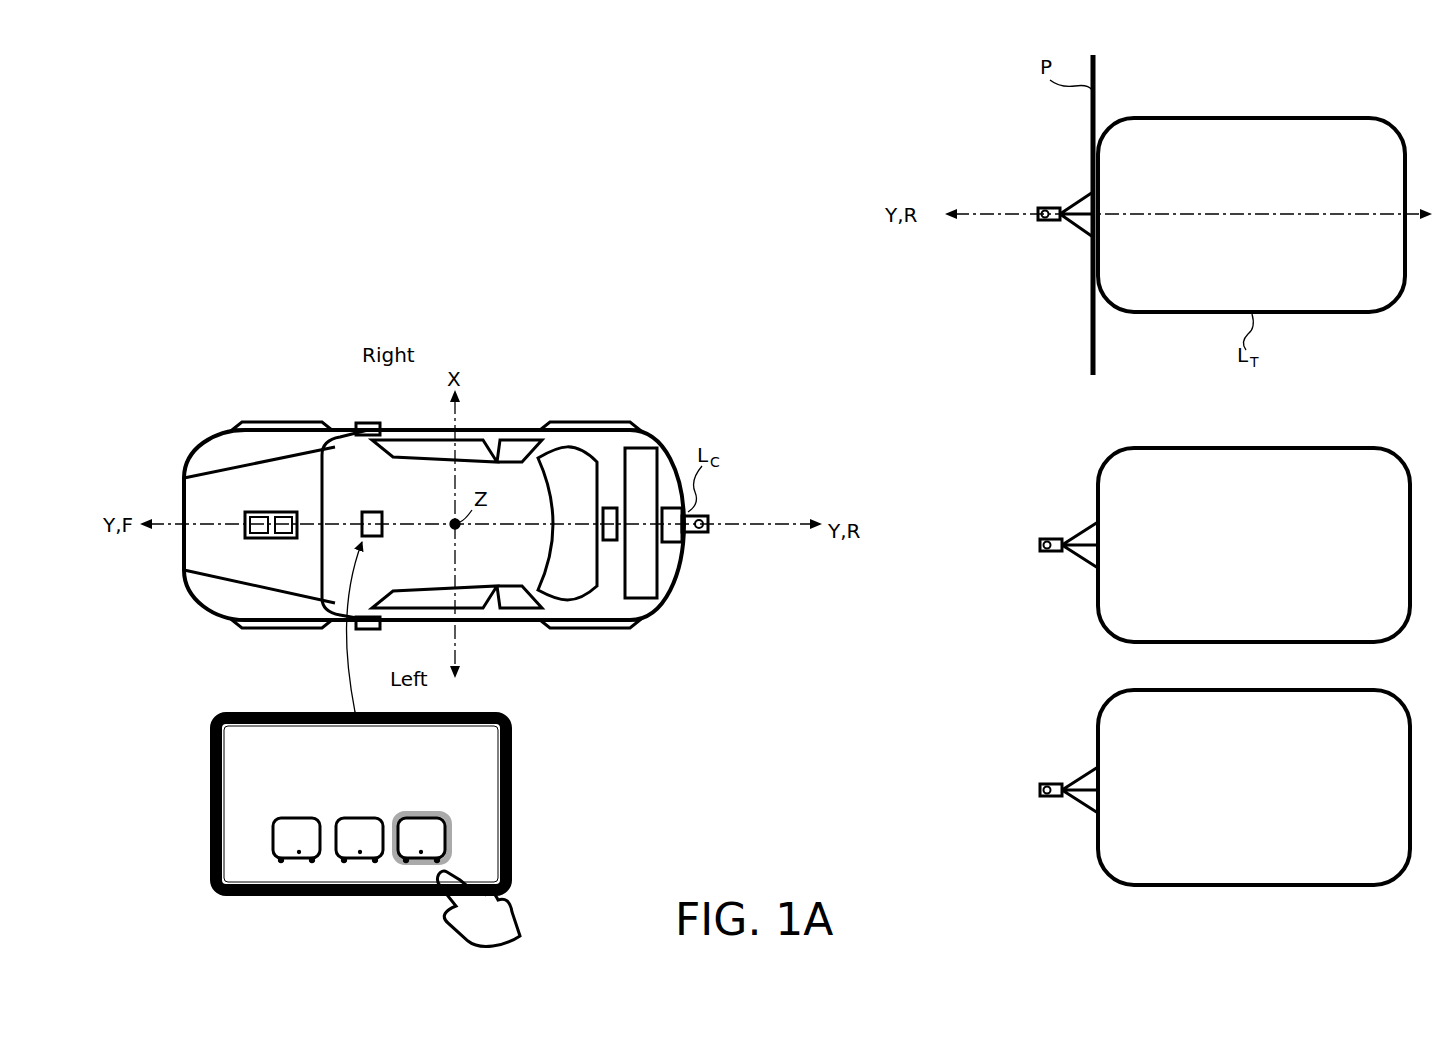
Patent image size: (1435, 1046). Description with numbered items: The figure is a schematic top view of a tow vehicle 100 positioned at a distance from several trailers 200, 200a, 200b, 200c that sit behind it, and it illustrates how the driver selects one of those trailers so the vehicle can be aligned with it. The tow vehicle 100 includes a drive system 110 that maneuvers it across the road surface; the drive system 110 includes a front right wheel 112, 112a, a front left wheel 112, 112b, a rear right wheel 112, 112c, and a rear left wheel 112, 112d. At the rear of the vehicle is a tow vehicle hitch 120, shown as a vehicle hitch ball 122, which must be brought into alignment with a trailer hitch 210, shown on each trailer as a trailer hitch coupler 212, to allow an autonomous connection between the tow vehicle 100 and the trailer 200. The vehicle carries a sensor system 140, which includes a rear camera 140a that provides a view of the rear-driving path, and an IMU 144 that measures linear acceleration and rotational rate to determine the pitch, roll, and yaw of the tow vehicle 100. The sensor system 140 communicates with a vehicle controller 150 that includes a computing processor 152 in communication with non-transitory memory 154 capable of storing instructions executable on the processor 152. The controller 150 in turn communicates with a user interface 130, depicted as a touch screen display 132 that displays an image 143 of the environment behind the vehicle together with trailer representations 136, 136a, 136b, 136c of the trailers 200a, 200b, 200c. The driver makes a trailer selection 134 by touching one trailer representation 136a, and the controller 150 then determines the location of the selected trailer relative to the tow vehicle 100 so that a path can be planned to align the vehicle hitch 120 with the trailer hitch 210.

The tow vehicle 100 is at (205, 412).
The drive system 110 is at (434, 524).
The wheel 112 is at (434, 524).
The front right wheel 112a is at (272, 422).
The front left wheel 112b is at (278, 630).
The rear right wheel 112c is at (578, 422).
The rear left wheel 112d is at (588, 630).
The tow vehicle hitch 120 is at (695, 532).
The vehicle hitch ball 122 is at (705, 530).
The user interface 130 is at (380, 524).
The touch screen display 132 is at (488, 800).
The trailer selection 134 is at (440, 816).
The trailer representation 136 is at (359, 809).
The trailer representation 136a is at (415, 818).
The trailer representation 136b is at (355, 818).
The trailer representation 136c is at (292, 818).
The sensor system 140 is at (370, 423).
The rear camera 140a is at (680, 543).
The image 143 is at (242, 756).
The IMU 144 is at (612, 540).
The vehicle controller 150 is at (268, 512).
The computing device (processor) 152 is at (258, 538).
The non-transitory memory 154 is at (284, 538).
The trailer 200 is at (1254, 501).
The trailer 200a is at (1251, 215).
The trailer 200b is at (1254, 545).
The trailer 200c is at (1254, 787).
The trailer hitch 210 is at (1054, 206).
The trailer hitch coupler 212 is at (1038, 210).